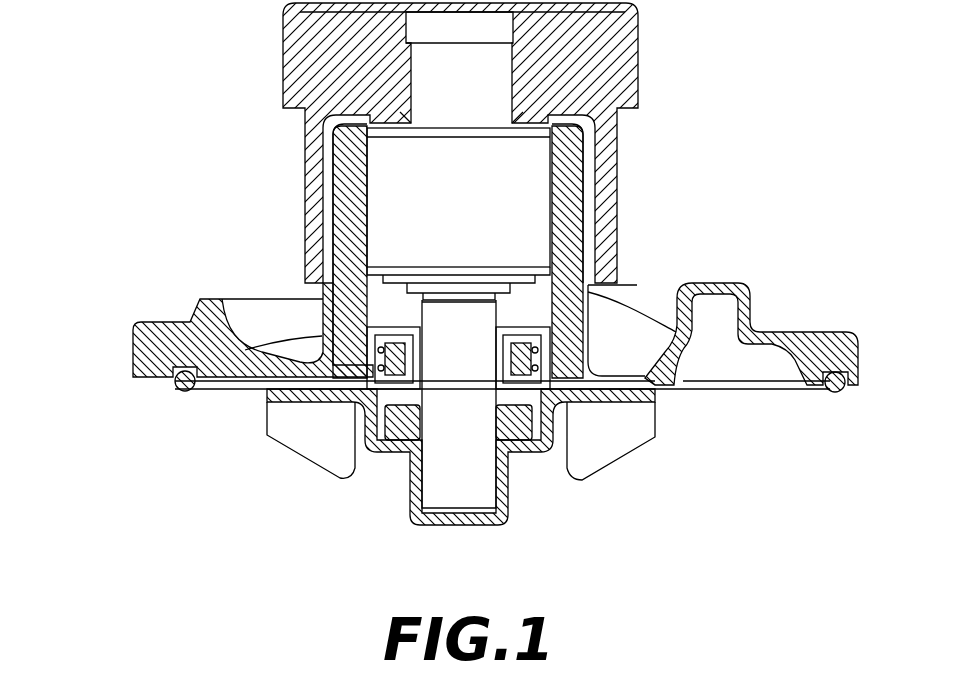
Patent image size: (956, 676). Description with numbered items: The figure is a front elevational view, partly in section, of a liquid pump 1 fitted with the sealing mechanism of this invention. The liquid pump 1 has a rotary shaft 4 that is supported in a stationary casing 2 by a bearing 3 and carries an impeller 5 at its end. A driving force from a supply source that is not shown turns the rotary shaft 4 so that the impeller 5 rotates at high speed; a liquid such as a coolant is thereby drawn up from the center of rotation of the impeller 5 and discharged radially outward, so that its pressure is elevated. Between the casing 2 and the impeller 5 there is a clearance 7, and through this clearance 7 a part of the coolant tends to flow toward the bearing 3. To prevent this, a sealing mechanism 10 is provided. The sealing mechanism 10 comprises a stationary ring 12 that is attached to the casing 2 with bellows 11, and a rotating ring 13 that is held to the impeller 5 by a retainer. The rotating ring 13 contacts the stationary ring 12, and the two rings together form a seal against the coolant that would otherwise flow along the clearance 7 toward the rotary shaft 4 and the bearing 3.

The liquid pump 1 is at (163, 105).
The stationary casing 2 is at (190, 320).
The bearing 3 is at (478, 197).
The rotary shaft 4 is at (455, 459).
The impeller 5 is at (597, 468).
The clearance 7 is at (662, 391).
The sealing mechanism 10 is at (378, 442).
The bellows 11 is at (383, 362).
The stationary ring 12 is at (382, 399).
The rotating ring 13 is at (384, 436).